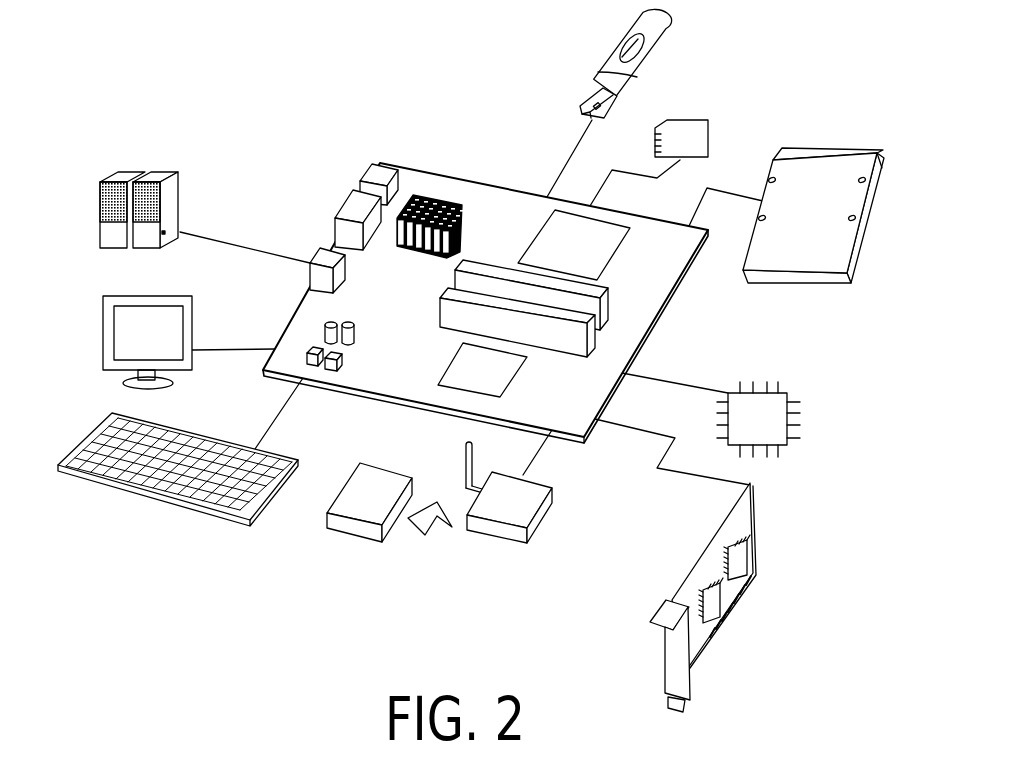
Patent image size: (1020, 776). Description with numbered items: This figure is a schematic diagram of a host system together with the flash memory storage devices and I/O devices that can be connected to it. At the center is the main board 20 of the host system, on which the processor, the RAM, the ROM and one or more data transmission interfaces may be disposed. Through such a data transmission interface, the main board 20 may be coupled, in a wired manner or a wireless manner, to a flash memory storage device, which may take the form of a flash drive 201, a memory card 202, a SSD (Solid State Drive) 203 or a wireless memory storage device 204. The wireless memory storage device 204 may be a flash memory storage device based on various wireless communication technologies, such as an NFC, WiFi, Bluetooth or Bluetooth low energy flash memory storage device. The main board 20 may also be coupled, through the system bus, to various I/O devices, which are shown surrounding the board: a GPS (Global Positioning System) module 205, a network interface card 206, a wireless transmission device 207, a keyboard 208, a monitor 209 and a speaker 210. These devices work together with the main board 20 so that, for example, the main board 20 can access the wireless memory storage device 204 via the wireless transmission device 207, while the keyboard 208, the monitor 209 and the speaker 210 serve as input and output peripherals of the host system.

The main board 20 is at (486, 193).
The flash drive 201 is at (610, 53).
The memory card 202 is at (708, 128).
The SSD (Solid State Drive) 203 is at (830, 148).
The wireless memory storage device 204 is at (343, 480).
The GPS (Global Positioning System) module 205 is at (800, 418).
The network interface card 206 is at (755, 540).
The wireless transmission device 207 is at (543, 527).
The keyboard 208 is at (183, 507).
The monitor 209 is at (103, 352).
The speaker 210 is at (98, 235).